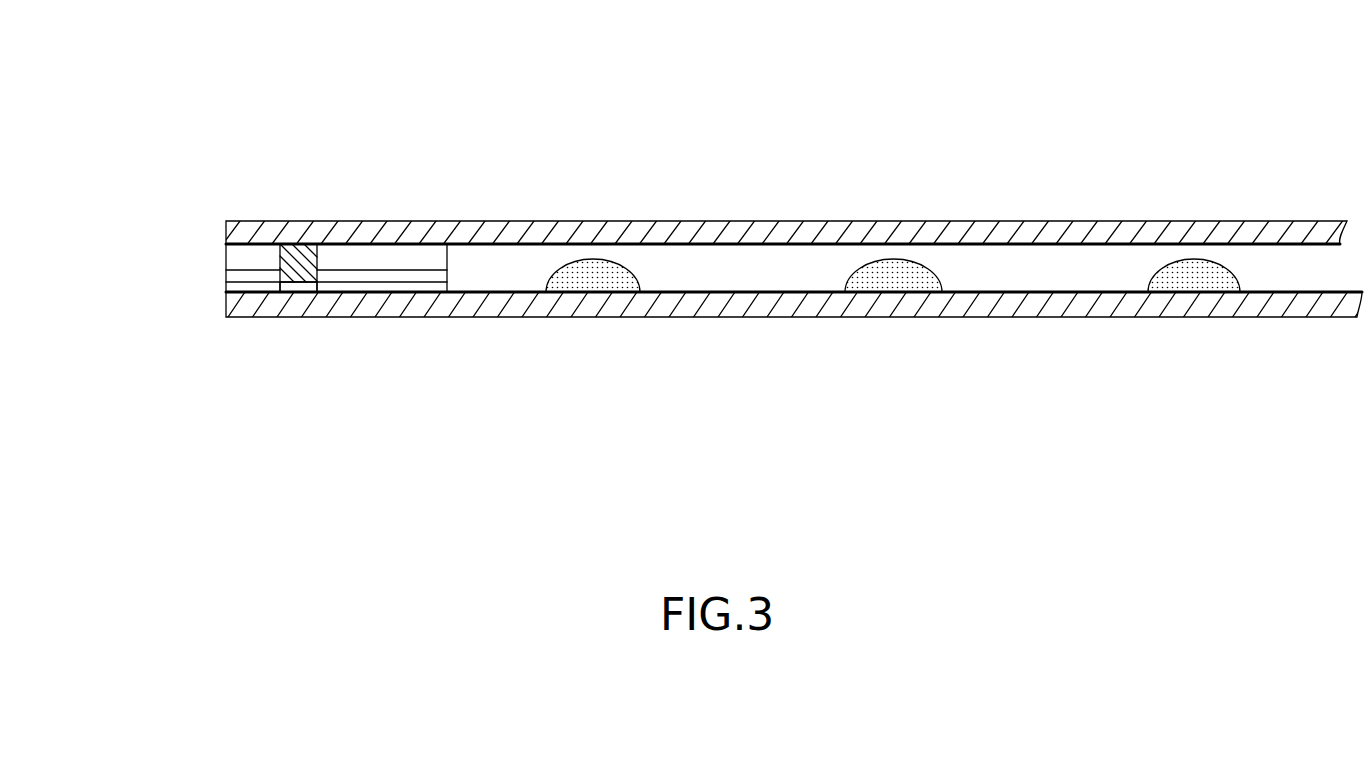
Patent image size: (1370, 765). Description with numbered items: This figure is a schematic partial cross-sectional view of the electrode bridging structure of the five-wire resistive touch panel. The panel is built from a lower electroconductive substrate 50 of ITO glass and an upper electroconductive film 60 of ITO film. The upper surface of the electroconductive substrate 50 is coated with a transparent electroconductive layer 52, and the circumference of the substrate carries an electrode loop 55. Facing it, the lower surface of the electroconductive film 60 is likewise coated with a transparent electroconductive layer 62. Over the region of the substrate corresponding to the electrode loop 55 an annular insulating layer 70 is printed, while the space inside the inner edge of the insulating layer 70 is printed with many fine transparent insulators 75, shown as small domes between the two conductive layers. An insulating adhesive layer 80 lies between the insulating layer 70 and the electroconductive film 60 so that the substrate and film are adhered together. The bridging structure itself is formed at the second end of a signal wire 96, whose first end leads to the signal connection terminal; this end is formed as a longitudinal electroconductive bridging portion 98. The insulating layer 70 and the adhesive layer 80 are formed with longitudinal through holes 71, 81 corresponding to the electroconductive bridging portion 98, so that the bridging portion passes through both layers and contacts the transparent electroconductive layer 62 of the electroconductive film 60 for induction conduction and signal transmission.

The electroconductive substrate 50 is at (1020, 316).
The transparent electroconductive layer 52 is at (742, 291).
The electrode loop 55 is at (238, 285).
The electroconductive film 60 is at (1031, 228).
The transparent electroconductive layer 62 is at (768, 248).
The insulating layer 70 is at (242, 272).
The through hole 71 is at (320, 271).
The transparent insulators 75 is at (598, 259).
The insulating adhesive layer 80 is at (238, 252).
The through hole 81 is at (340, 246).
The signal wire 96 is at (300, 292).
The electroconductive bridging portion 98 is at (303, 254).